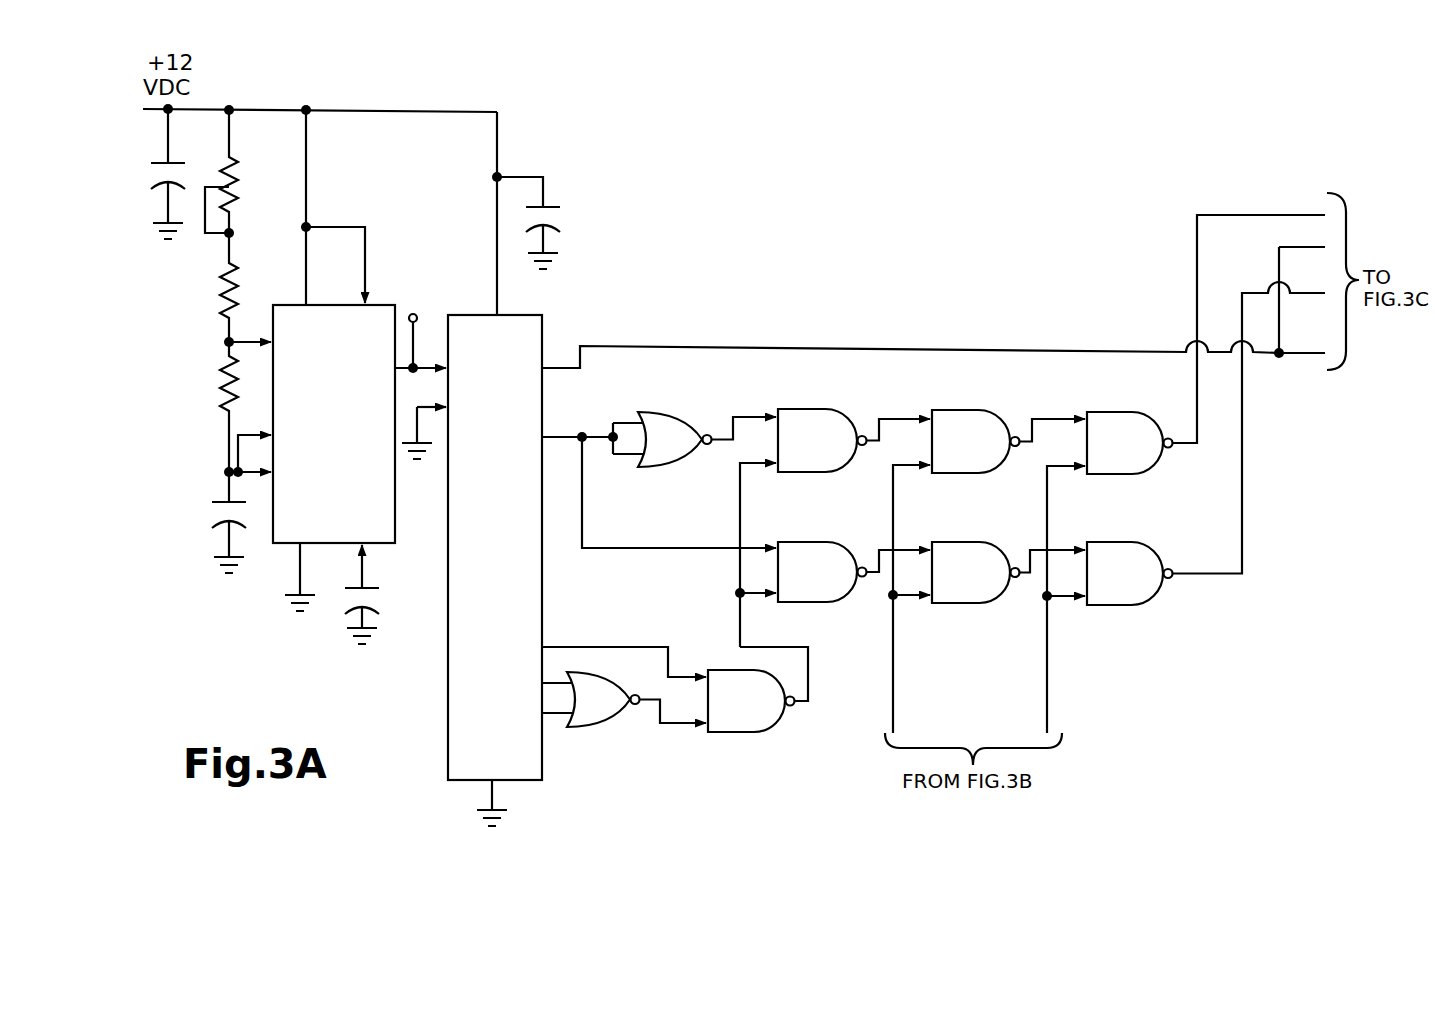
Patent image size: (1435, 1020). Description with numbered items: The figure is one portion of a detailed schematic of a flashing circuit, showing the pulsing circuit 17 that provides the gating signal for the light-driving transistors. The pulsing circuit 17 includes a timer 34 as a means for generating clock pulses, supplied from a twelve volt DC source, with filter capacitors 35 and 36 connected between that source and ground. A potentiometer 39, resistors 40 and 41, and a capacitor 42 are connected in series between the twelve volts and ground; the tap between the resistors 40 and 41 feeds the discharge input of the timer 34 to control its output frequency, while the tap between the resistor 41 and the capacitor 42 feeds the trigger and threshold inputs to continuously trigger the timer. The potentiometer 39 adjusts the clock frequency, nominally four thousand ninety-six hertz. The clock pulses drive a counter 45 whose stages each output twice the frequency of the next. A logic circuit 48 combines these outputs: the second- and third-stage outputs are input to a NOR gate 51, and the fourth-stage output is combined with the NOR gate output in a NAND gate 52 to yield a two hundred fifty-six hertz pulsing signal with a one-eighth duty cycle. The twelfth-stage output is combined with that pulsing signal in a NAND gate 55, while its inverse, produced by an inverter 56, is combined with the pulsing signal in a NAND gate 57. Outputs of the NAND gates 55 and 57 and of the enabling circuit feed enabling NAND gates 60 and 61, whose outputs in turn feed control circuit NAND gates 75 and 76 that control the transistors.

The pulsing circuit 17 is at (454, 469).
The 555 timer 34 is at (343, 435).
The filter capacitor 35 is at (178, 160).
The filter capacitor 36 is at (556, 207).
The potentiometer 39 is at (237, 188).
The resistor 40 is at (236, 292).
The resistor 41 is at (222, 382).
The capacitor 42 is at (216, 500).
The counter 45 is at (504, 538).
The logic circuit 48 is at (675, 736).
The NOR gate 51 is at (624, 699).
The NAND gate 52 is at (675, 689).
The NAND gate 55 is at (756, 519).
The inverter 56 is at (694, 439).
The NAND gate 57 is at (835, 528).
The enabling NAND gate 60 is at (986, 572).
The enabling NAND gate 61 is at (989, 571).
The control circuit NAND gate 75 is at (1183, 443).
The control circuit NAND gate 76 is at (1186, 474).